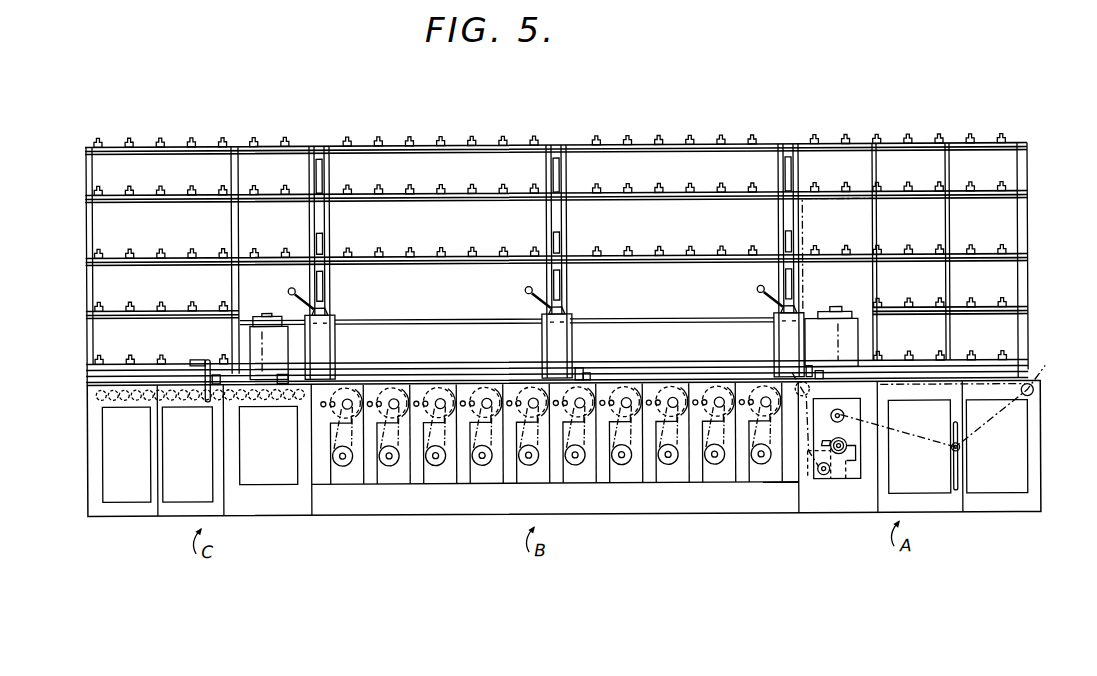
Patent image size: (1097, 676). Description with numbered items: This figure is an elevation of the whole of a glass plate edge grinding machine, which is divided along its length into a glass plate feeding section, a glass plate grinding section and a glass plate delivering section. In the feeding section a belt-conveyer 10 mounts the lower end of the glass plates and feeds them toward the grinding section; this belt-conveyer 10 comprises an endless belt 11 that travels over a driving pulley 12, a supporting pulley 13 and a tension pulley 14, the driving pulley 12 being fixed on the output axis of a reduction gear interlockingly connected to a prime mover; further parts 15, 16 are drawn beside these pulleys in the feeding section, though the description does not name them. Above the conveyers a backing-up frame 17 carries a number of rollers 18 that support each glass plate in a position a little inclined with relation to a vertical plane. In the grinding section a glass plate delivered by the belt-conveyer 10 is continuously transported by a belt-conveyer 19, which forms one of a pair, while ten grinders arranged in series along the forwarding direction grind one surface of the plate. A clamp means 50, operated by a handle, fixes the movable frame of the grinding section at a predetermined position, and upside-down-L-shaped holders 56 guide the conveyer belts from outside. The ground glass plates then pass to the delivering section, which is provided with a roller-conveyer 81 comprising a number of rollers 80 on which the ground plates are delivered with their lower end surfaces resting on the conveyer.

The belt-conveyer 10 is at (1020, 411).
The endless belt 11 is at (984, 427).
The driving pulley 12 is at (818, 470).
The supporting pulley 13 is at (792, 374).
The tension pulley 14 is at (950, 444).
The roller support 15 is at (848, 480).
The drive belt 16 is at (830, 478).
The backing-up frame 17 is at (1033, 182).
The rollers 18 is at (967, 137).
The belt-conveyer 19 is at (441, 333).
The clamp means 50 is at (326, 311).
The upside-down-L-shaped holder 56 is at (325, 350).
The rollers 80 is at (100, 394).
The roller-conveyer 81 is at (108, 410).